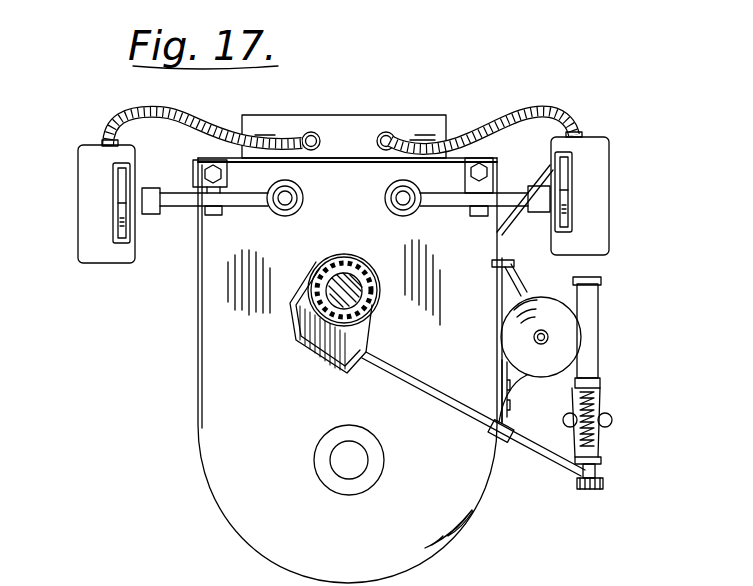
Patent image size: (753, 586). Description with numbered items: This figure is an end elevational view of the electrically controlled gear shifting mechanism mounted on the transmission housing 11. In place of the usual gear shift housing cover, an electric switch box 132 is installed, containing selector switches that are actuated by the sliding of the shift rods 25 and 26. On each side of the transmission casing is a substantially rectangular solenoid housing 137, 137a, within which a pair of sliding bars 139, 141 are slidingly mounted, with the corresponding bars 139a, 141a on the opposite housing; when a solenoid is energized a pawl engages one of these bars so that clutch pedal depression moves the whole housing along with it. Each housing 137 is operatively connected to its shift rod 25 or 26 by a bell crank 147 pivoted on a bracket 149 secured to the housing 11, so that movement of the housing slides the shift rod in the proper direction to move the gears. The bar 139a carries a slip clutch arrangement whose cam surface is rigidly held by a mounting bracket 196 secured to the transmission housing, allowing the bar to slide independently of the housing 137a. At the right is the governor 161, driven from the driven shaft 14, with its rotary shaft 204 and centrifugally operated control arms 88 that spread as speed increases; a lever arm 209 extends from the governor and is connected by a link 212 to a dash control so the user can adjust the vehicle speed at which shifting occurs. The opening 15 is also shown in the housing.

The housing 11 is at (198, 408).
The driven shaft 14 is at (344, 278).
The opening 15 is at (352, 473).
The shift rod 25 is at (278, 216).
The shift rod 26 is at (390, 200).
The governor control arms 88 is at (600, 450).
The electric switch box 132 is at (342, 128).
The housing 137 is at (78, 192).
The housing 137a is at (587, 193).
The sliding bar 139 is at (126, 180).
The shift bar 139a is at (565, 170).
The sliding bar 141 is at (126, 225).
The slot 141a is at (567, 215).
The bell crank 147 is at (251, 204).
The bracket 149 is at (202, 220).
The governor 161 is at (592, 340).
The mounting bracket 196 is at (516, 200).
The rotary shaft 204 is at (592, 408).
The lever arm 209 is at (513, 283).
The link 212 is at (492, 264).